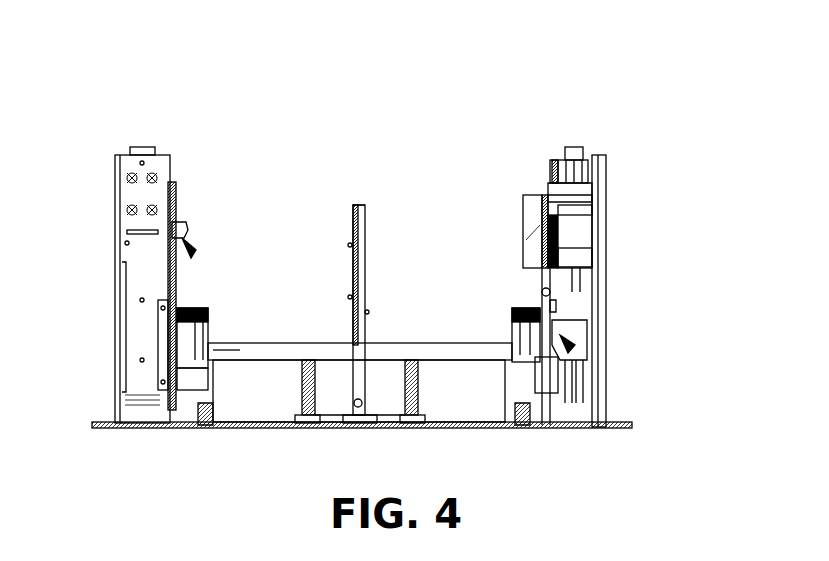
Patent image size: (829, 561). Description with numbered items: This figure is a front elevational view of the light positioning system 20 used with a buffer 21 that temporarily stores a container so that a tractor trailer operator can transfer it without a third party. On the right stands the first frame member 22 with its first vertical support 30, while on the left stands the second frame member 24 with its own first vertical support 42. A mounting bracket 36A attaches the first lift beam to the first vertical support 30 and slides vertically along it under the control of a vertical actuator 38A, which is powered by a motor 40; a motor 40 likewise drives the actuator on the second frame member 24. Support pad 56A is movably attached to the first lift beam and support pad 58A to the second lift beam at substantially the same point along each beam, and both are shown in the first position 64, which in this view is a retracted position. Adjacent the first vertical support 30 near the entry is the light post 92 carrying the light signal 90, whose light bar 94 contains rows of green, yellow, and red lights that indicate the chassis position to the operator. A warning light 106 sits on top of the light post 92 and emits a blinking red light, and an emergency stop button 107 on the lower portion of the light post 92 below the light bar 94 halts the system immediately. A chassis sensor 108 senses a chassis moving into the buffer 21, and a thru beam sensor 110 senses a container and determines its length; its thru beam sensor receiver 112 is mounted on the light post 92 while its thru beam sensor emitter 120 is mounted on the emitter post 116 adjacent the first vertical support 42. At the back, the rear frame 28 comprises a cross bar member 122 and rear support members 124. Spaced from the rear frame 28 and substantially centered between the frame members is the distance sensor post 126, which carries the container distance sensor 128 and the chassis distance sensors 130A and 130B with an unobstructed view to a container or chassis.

The light positioning system 20 is at (578, 32).
The buffer 21 is at (255, 136).
The first frame member 22 is at (605, 112).
The second frame member 24 is at (175, 130).
The rear frame 28 is at (455, 240).
The first vertical support 30 is at (597, 162).
The mounting bracket 36A is at (553, 330).
The vertical actuator 38A is at (585, 285).
The motor 40 is at (140, 137).
The first vertical support 42 is at (114, 158).
The support pad 56A is at (511, 320).
The support pad 58A is at (208, 312).
The first position 64 is at (226, 278).
The light signal 90 is at (540, 135).
The light post 92 is at (537, 183).
The light bar 94 is at (527, 197).
The warning light 106 is at (545, 152).
The emergency stop button 107 is at (560, 306).
The chassis sensor 108 is at (568, 350).
The thru beam sensor 110 is at (191, 260).
The thru beam sensor receiver 112 is at (547, 226).
The emitter post 116 is at (176, 190).
The thru beam sensor emitter 120 is at (186, 224).
The cross bar member 122 is at (247, 351).
The rear support member 124 is at (303, 390).
The distance sensor post 126 is at (365, 205).
The container distance sensor 128 is at (345, 243).
The chassis distance sensor 130A is at (343, 296).
The chassis distance sensor 130B is at (374, 311).